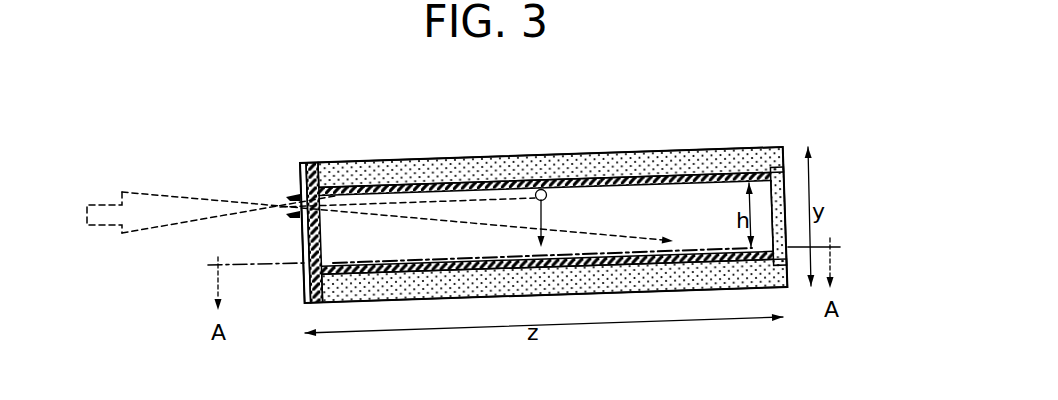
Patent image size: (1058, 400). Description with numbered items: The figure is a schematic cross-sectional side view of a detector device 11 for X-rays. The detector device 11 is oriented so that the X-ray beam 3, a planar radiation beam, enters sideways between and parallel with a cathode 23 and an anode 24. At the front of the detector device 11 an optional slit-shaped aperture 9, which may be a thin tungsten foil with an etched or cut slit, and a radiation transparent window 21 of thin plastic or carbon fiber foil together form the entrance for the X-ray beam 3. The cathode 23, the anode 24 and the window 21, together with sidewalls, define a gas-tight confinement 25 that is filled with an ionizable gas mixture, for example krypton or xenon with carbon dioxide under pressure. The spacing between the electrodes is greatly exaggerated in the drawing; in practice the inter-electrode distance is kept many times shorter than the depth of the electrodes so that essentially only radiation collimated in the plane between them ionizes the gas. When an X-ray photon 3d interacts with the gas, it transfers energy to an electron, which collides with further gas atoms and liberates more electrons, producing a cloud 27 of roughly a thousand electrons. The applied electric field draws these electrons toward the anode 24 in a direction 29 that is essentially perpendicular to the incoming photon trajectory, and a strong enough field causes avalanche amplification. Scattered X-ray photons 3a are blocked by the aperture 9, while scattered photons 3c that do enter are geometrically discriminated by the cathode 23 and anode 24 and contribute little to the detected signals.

The X-ray beam 3 is at (166, 196).
The scattered X-ray photons 3a is at (282, 199).
The scattered X-ray photons 3c is at (378, 213).
The X-ray photon 3d is at (500, 168).
The slit-shaped aperture 9 is at (312, 166).
The detector device 11 is at (335, 88).
The radiation transparent window 21 is at (305, 274).
The cathode 23 is at (398, 189).
The anode 24 is at (334, 263).
The gas-tight confinement 25 is at (691, 192).
The cloud 27 is at (546, 196).
The direction 29 is at (540, 219).